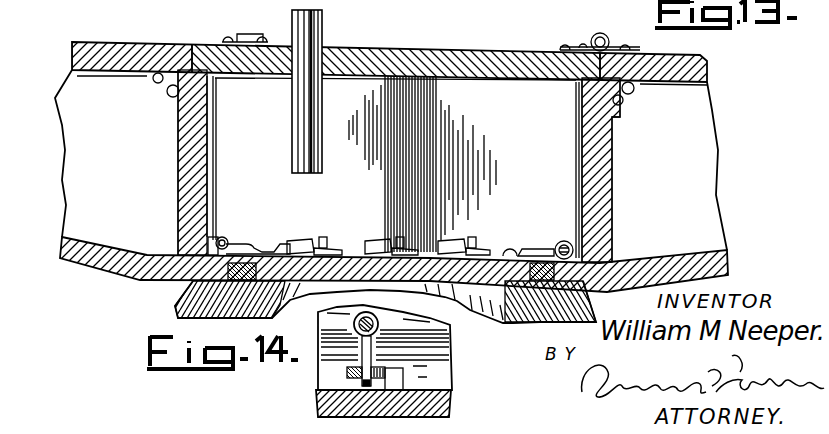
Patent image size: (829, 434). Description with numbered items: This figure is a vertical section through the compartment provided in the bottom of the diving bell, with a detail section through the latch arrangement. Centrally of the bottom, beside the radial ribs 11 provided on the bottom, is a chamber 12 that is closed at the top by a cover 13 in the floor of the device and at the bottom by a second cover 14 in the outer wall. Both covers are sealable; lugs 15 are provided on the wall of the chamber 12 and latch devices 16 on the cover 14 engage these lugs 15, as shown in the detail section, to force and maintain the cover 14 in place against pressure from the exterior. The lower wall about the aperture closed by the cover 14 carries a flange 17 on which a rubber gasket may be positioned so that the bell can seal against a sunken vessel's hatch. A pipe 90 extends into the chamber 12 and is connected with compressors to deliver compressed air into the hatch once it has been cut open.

In FIG. 13, the radial ribs 11 is at (391, 131).
In FIG. 13, the chamber 12 is at (432, 126).
In FIG. 13, the cover 13 is at (494, 54).
In FIG. 13, the second cover 14 is at (300, 227).
In FIG. 14, the second cover 14 is at (452, 406).
In FIG. 13, the lugs 15 is at (378, 247).
In FIG. 14, the lugs 15 is at (365, 370).
In FIG. 13, the latch devices 16 is at (323, 238).
In FIG. 14, the latch devices 16 is at (366, 348).
In FIG. 13, the flange 17 is at (517, 313).
In FIG. 13, the pipe 90 is at (293, 125).